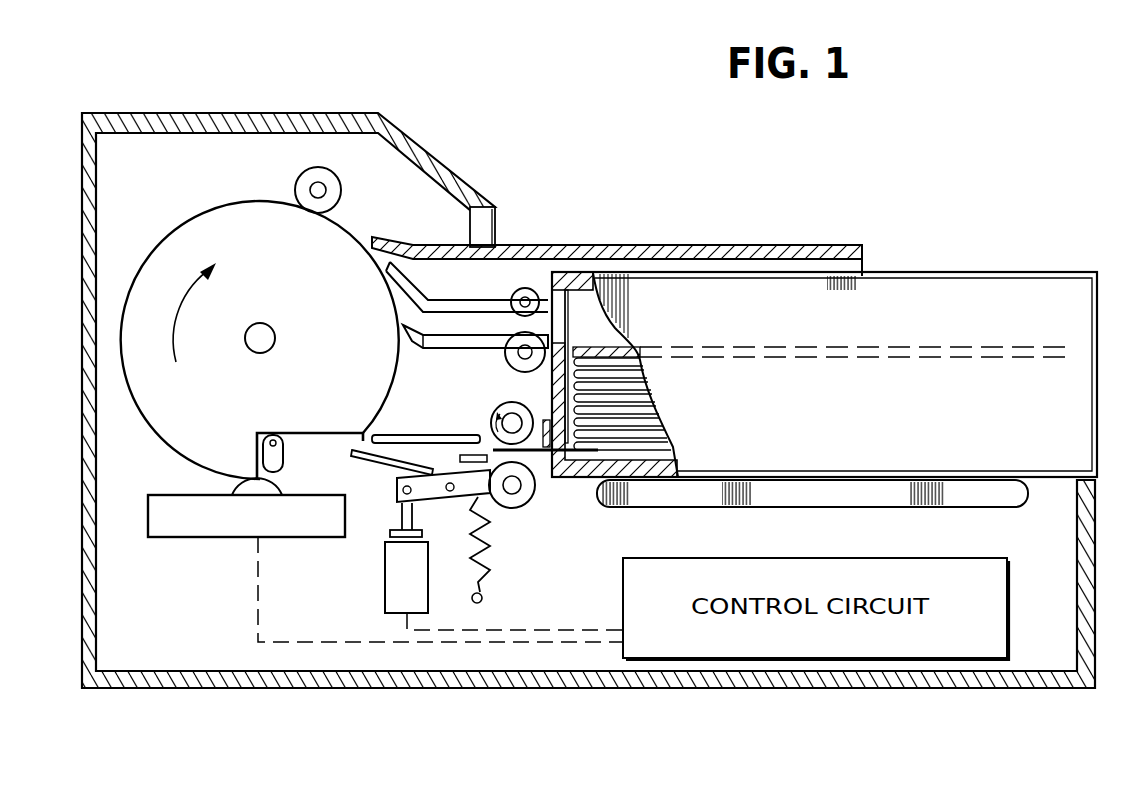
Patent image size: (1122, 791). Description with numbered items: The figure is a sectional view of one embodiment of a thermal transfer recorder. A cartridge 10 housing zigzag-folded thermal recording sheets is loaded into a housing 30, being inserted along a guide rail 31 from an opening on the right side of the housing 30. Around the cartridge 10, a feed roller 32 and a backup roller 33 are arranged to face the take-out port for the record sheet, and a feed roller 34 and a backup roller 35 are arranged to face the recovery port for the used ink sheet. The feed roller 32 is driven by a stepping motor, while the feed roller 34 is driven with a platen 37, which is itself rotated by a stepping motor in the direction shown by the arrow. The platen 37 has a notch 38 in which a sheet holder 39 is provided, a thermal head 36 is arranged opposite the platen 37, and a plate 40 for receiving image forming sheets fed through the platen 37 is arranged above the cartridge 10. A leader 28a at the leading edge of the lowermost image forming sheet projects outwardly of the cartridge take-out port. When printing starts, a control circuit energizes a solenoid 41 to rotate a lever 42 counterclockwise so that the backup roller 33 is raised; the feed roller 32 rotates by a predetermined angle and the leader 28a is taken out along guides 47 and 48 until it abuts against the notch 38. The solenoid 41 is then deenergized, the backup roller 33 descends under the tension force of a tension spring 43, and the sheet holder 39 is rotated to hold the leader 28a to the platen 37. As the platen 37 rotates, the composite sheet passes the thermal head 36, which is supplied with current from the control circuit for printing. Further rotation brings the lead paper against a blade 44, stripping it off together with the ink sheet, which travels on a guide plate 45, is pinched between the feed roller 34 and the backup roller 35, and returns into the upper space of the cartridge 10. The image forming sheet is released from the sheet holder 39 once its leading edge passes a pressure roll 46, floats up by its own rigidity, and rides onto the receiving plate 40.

The cartridge 10 is at (955, 268).
The leader 28a is at (538, 462).
The housing 30 is at (252, 113).
The guide rail 31 is at (903, 506).
The feed roller 32 is at (505, 407).
The backup roller 33 is at (515, 508).
The feed roller 34 is at (513, 296).
The backup roller 35 is at (526, 372).
The thermal head 36 is at (195, 528).
The platen 37 is at (175, 248).
The notch 38 is at (333, 433).
The sheet holder 39 is at (283, 457).
The plate 40 is at (775, 245).
The solenoid 41 is at (385, 597).
The lever 42 is at (398, 490).
The tension spring 43 is at (485, 565).
The blade 44 is at (415, 343).
The guide plate 45 is at (448, 348).
The pressure roll 46 is at (345, 187).
The guide 47 is at (410, 436).
The guide 48 is at (380, 464).